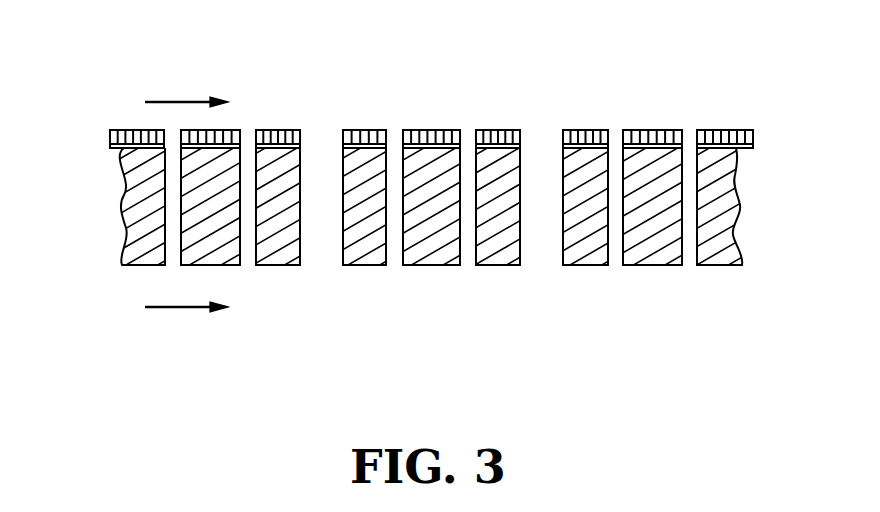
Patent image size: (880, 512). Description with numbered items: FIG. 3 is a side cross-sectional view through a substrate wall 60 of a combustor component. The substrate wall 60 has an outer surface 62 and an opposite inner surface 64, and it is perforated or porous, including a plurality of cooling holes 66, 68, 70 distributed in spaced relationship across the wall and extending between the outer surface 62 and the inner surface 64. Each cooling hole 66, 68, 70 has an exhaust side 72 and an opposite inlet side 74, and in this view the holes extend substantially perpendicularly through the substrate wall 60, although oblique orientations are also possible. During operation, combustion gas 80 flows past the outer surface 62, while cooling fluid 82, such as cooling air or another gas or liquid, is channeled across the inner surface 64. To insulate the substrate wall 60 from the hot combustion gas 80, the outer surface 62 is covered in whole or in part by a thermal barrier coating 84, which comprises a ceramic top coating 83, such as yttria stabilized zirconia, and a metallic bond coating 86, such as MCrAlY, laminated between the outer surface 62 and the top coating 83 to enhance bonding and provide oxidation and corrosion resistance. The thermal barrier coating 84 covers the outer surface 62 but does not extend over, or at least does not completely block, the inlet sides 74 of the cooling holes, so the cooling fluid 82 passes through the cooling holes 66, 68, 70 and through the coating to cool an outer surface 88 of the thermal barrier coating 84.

The substrate wall 60 is at (620, 292).
The outer surface 62 is at (279, 130).
The inner surface 64 is at (285, 268).
The cooling hole 66 is at (393, 252).
The cooling hole 68 is at (542, 243).
The cooling hole 70 is at (467, 155).
The exhaust side 72 is at (470, 253).
The inlet side 74 is at (320, 153).
The combustion gas 80 is at (185, 101).
The cooling fluid 82 is at (188, 310).
The top coating 83 is at (423, 140).
The thermal barrier coating 84 is at (103, 131).
The metallic bond coating 86 is at (638, 138).
The outer surface of TBC 88 is at (497, 131).